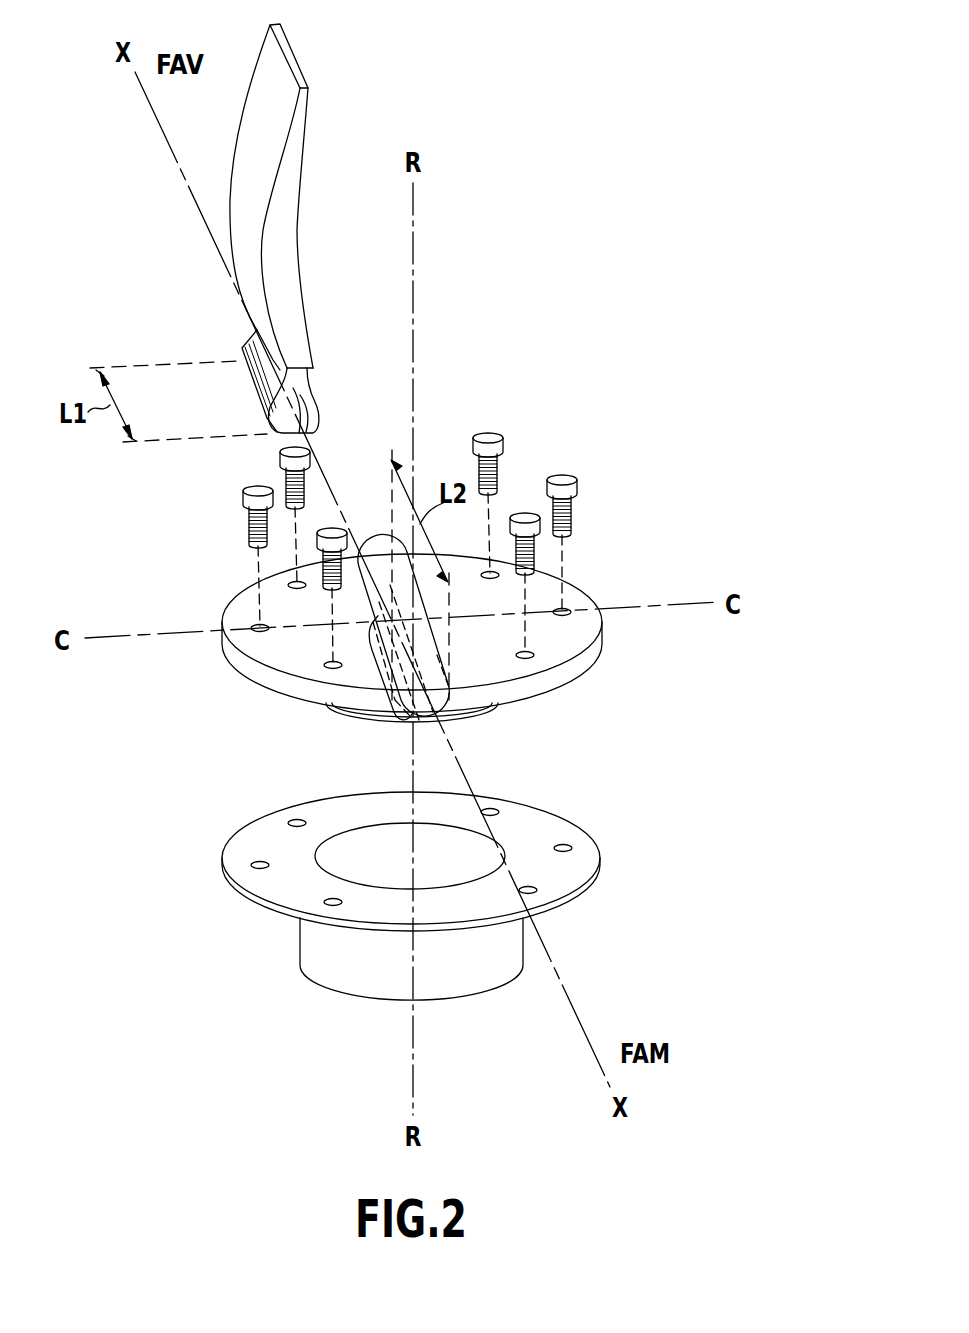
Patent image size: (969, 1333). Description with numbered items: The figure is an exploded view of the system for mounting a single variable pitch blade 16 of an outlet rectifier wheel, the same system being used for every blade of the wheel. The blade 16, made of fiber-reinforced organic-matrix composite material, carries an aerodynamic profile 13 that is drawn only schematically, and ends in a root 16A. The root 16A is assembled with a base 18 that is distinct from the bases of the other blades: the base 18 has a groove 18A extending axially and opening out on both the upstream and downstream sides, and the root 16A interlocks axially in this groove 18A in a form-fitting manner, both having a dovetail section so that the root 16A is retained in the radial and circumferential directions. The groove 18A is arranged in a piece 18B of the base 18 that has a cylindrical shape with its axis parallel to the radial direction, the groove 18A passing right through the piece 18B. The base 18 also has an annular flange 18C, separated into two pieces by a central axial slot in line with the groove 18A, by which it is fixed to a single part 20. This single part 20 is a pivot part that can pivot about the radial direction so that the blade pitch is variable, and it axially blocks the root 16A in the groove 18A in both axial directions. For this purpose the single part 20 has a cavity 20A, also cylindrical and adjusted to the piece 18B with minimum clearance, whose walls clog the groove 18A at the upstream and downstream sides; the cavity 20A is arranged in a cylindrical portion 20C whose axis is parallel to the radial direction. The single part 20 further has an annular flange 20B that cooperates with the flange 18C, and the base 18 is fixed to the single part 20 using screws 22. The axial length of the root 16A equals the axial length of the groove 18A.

The aerodynamic profile 13 is at (291, 232).
The blade 16 is at (350, 102).
The root 16A is at (323, 420).
The base 18 is at (612, 686).
The groove 18A is at (440, 720).
The piece 18B is at (372, 722).
The annular flange 18C is at (553, 638).
The single part 20 is at (208, 934).
The cavity 20A is at (351, 868).
The annular flange 20B is at (260, 840).
The cylindrical portion 20C is at (323, 967).
The screws 22 is at (280, 455).